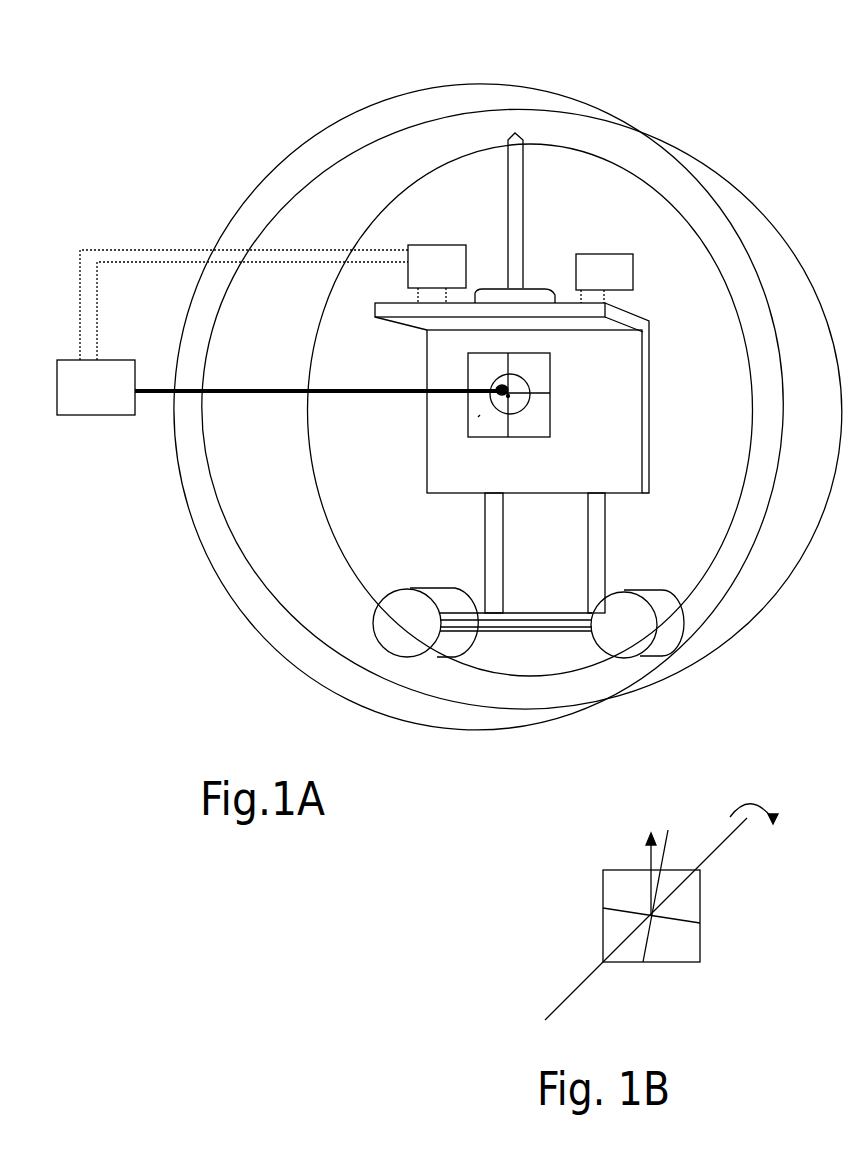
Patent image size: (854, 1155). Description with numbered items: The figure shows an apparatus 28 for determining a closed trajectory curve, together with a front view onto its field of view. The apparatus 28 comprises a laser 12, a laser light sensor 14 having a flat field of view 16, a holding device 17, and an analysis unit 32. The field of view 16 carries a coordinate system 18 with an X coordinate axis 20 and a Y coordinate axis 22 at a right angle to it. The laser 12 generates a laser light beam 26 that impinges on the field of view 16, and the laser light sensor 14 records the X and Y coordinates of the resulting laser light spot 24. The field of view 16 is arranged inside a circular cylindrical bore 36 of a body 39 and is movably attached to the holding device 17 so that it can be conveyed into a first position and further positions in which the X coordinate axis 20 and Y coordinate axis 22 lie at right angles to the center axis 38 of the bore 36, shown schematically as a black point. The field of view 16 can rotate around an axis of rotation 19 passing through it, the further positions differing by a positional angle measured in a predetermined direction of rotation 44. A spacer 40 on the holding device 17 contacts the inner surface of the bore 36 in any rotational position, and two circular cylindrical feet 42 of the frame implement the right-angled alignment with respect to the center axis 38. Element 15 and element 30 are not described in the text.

In FIG. 1A, the laser 12 is at (95, 385).
In FIG. 1A, the laser light sensor 14 is at (571, 406).
In FIG. 1A, the platform assembly 15 is at (556, 248).
In FIG. 1A, the field of view 16 is at (532, 432).
In FIG. 1B, the field of view 16 is at (618, 927).
In FIG. 1A, the holding device 17 is at (637, 452).
In FIG. 1A, the coordinate system 18 is at (478, 417).
In FIG. 1A, the axis of rotation 19 is at (508, 398).
In FIG. 1B, the axis of rotation 19 is at (722, 847).
In FIG. 1A, the X coordinate axis 20 is at (537, 393).
In FIG. 1B, the X coordinate axis 20 is at (683, 922).
In FIG. 1A, the Y coordinate axis 22 is at (502, 363).
In FIG. 1B, the Y coordinate axis 22 is at (648, 856).
In FIG. 1A, the laser light spot 24 is at (497, 391).
In FIG. 1A, the laser light beam 26 is at (250, 394).
In FIG. 1A, the apparatus for determining a closed trajectory curve 28 is at (186, 587).
In FIG. 1A, the drive unit 30 is at (453, 233).
In FIG. 1A, the analysis unit 32 is at (612, 266).
In FIG. 1A, the circular cylindrical bore 36 is at (363, 472).
In FIG. 1A, the center axis 38 is at (500, 390).
In FIG. 1A, the body 39 is at (510, 108).
In FIG. 1A, the spacer 40 is at (516, 178).
In FIG. 1A, the feet 42 is at (400, 603).
In FIG. 1B, the direction of rotation 44 is at (757, 800).